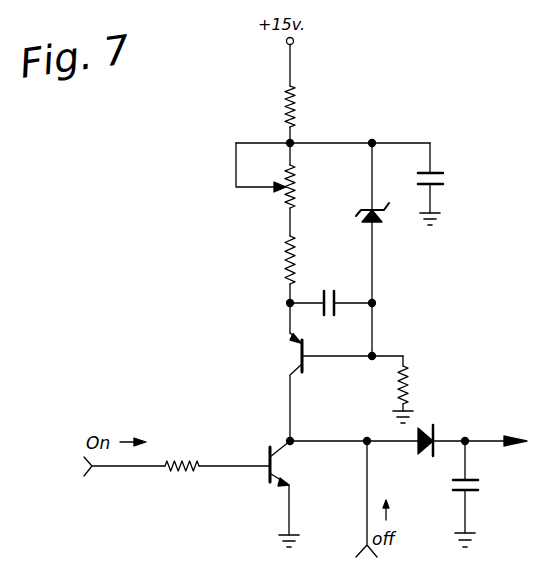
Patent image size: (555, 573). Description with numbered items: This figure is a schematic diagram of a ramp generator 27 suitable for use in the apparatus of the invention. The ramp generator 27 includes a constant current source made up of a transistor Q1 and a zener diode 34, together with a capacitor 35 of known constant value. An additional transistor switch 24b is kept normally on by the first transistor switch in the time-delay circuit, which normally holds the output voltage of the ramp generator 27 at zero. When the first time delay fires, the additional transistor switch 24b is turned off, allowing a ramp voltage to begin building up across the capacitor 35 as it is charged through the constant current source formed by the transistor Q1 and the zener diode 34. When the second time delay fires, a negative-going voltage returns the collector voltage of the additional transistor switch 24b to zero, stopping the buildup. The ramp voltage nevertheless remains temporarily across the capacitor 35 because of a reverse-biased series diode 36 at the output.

The ramp generator 27 is at (249, 130).
The zener diode 34 is at (378, 223).
The transistor Q1 is at (300, 358).
The additional transistor switch 24b is at (270, 455).
The series diode 36 is at (420, 427).
The capacitor 35 is at (475, 492).